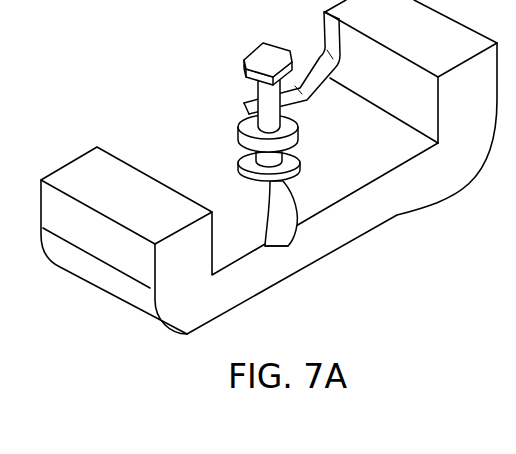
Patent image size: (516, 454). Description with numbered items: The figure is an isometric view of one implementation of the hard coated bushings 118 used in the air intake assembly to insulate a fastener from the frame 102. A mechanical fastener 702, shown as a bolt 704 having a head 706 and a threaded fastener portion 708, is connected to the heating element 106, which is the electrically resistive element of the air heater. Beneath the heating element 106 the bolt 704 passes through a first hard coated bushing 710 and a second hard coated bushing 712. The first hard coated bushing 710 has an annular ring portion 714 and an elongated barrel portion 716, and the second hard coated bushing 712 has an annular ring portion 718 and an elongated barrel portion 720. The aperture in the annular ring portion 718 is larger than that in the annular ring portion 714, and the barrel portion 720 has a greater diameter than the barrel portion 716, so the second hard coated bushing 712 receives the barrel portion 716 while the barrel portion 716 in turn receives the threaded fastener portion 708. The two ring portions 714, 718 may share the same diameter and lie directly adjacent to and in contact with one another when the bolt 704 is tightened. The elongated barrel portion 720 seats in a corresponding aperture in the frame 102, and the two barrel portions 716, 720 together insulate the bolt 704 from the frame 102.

The frame 102 is at (130, 291).
The heating element 106 is at (263, 71).
The hard coated bushings 118 is at (277, 192).
The mechanical fastener 702 is at (182, 89).
The bolt 704 is at (251, 99).
The head 706 is at (244, 55).
The threaded fastener portion 708 is at (280, 115).
The first hard coated bushing 710 is at (295, 133).
The second hard coated bushing 712 is at (299, 172).
The annular ring portion 714 is at (297, 153).
The elongated barrel portion 716 is at (294, 222).
The annular ring portion 718 is at (239, 157).
The elongated barrel portion 720 is at (265, 246).